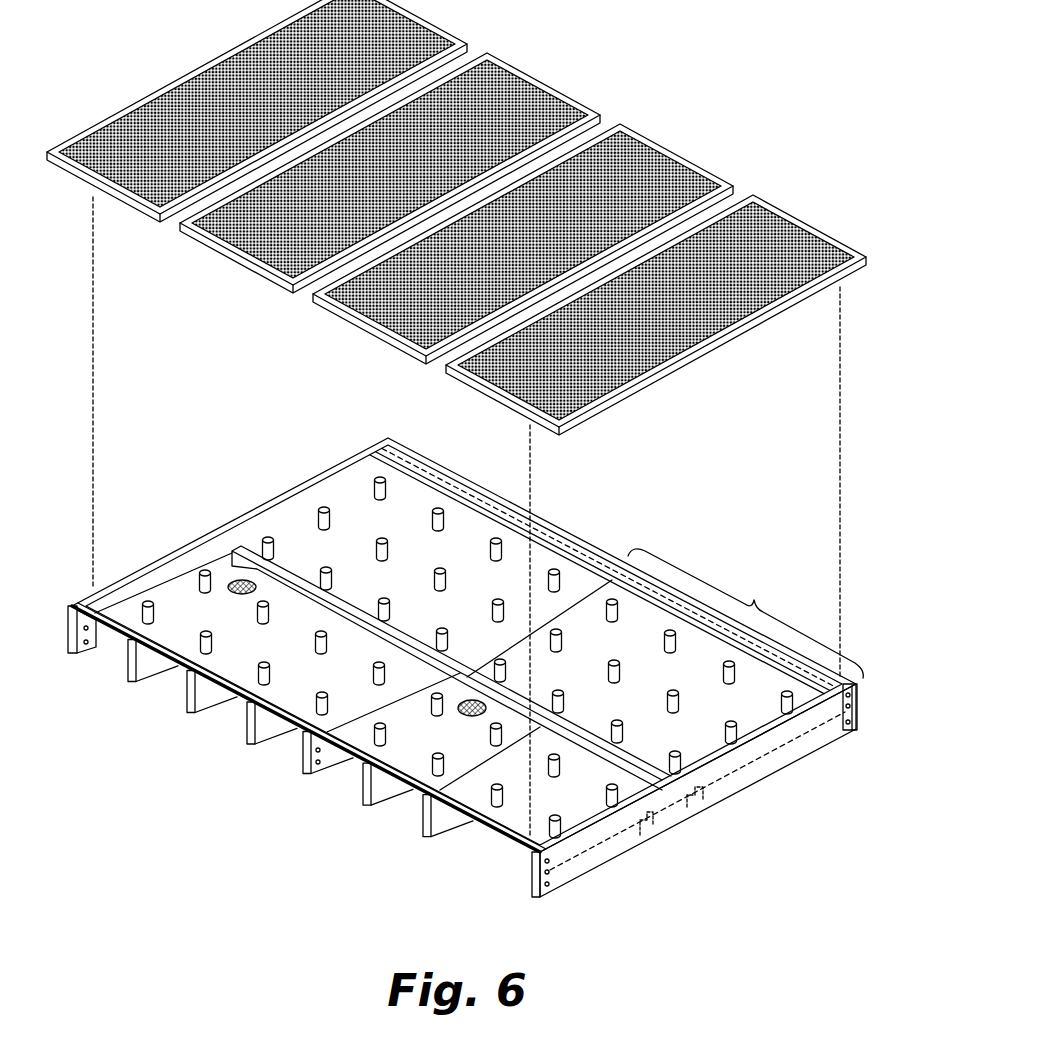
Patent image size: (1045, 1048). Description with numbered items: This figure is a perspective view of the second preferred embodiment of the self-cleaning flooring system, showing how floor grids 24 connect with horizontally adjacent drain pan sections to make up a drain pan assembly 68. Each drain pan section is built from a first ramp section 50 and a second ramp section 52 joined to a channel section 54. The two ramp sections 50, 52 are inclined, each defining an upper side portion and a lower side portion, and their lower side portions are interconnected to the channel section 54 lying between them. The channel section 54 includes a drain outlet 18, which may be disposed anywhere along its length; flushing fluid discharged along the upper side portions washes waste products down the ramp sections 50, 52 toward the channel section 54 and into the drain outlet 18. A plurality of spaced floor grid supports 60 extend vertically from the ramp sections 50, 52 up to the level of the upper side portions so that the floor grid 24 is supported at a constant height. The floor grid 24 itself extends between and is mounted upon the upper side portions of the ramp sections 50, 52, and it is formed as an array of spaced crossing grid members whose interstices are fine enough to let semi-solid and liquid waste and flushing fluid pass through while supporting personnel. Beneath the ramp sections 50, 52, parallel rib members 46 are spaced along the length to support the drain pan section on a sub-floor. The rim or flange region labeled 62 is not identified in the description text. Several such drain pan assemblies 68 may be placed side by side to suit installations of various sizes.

The drain outlet 18 is at (248, 580).
The floor grid 24 is at (176, 227).
The rib member 46 is at (358, 790).
The first ramp section 50 is at (577, 810).
The second ramp section 52 is at (743, 710).
The channel section 54 is at (647, 795).
The floor grid support 60 is at (494, 536).
The rim flange 62 is at (217, 545).
The drain pan assembly 68 is at (745, 613).